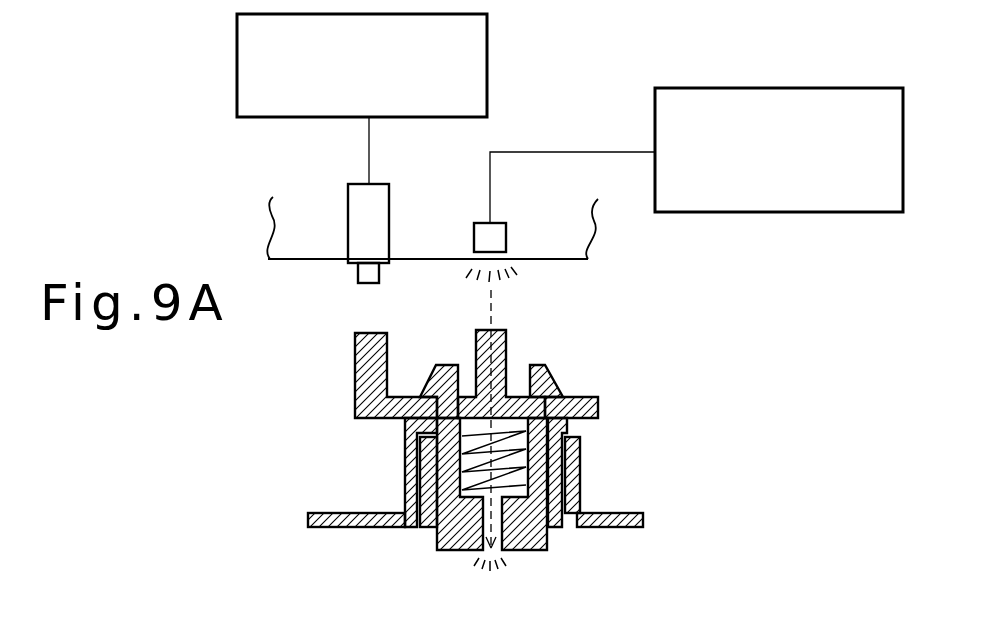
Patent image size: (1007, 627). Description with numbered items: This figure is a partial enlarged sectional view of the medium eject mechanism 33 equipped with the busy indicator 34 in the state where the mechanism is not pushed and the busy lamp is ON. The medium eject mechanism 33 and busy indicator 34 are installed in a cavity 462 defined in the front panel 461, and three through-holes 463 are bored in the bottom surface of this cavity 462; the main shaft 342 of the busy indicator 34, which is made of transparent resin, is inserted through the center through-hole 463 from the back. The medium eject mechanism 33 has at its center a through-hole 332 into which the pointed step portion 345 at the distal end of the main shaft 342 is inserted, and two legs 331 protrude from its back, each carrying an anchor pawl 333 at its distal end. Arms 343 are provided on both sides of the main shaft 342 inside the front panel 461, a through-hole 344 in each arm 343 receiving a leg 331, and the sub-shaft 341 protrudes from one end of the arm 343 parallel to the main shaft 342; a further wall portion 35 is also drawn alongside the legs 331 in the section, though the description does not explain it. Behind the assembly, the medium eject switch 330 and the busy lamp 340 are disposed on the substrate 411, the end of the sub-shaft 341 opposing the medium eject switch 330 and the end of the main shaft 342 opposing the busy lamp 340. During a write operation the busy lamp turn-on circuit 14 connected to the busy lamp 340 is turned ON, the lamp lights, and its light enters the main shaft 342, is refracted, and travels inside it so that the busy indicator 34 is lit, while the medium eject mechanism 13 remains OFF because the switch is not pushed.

The medium eject mechanism 13 is at (489, 62).
The busy lamp turn-on circuit 14 is at (760, 88).
The medium eject switch 330 is at (380, 200).
The busy lamp 340 is at (500, 235).
The substrate 411 is at (600, 238).
The sub-shaft 341 is at (360, 373).
The through-hole 344 is at (418, 398).
The main shaft 342 is at (508, 334).
The anchor pawl 333 is at (548, 386).
The arm 343 is at (600, 408).
The through-hole 463 is at (418, 450).
The cavity 462 is at (430, 466).
The holder 35 is at (512, 440).
The leg 331 is at (522, 472).
The step portion 345 is at (515, 512).
The front panel 461 is at (330, 527).
The through-hole 332 is at (476, 530).
The medium eject mechanism 33 is at (520, 494).
The busy indicator 34 is at (504, 554).